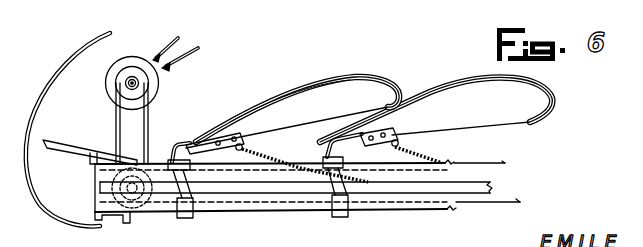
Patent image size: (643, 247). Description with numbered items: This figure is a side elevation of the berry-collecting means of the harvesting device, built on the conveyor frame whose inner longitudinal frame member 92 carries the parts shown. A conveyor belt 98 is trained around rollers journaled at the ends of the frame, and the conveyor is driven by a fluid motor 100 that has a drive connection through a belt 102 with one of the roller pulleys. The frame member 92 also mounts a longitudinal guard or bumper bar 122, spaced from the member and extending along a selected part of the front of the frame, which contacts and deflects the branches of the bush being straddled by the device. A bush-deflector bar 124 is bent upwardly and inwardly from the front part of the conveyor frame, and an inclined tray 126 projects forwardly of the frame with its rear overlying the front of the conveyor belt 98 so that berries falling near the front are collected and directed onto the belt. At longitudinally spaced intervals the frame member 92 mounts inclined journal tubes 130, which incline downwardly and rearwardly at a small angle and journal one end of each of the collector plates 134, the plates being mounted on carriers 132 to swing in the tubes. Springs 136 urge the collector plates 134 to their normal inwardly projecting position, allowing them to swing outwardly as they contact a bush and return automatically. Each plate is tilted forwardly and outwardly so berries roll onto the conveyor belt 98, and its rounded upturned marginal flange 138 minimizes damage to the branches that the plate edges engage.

The longitudinal frame member 92 is at (407, 195).
The conveyor belt 98 is at (508, 202).
The fluid motor 100 is at (159, 85).
The belt 102 is at (117, 117).
The bumper bar 122 is at (260, 187).
The bush-deflector bar 124 is at (85, 47).
The inclined tray 126 is at (60, 150).
The inclined journal tube 130 is at (177, 208).
The carrier 132 is at (177, 148).
The collector plate 134 is at (322, 103).
The spring 136 is at (273, 150).
The upturned marginal flange 138 is at (297, 76).